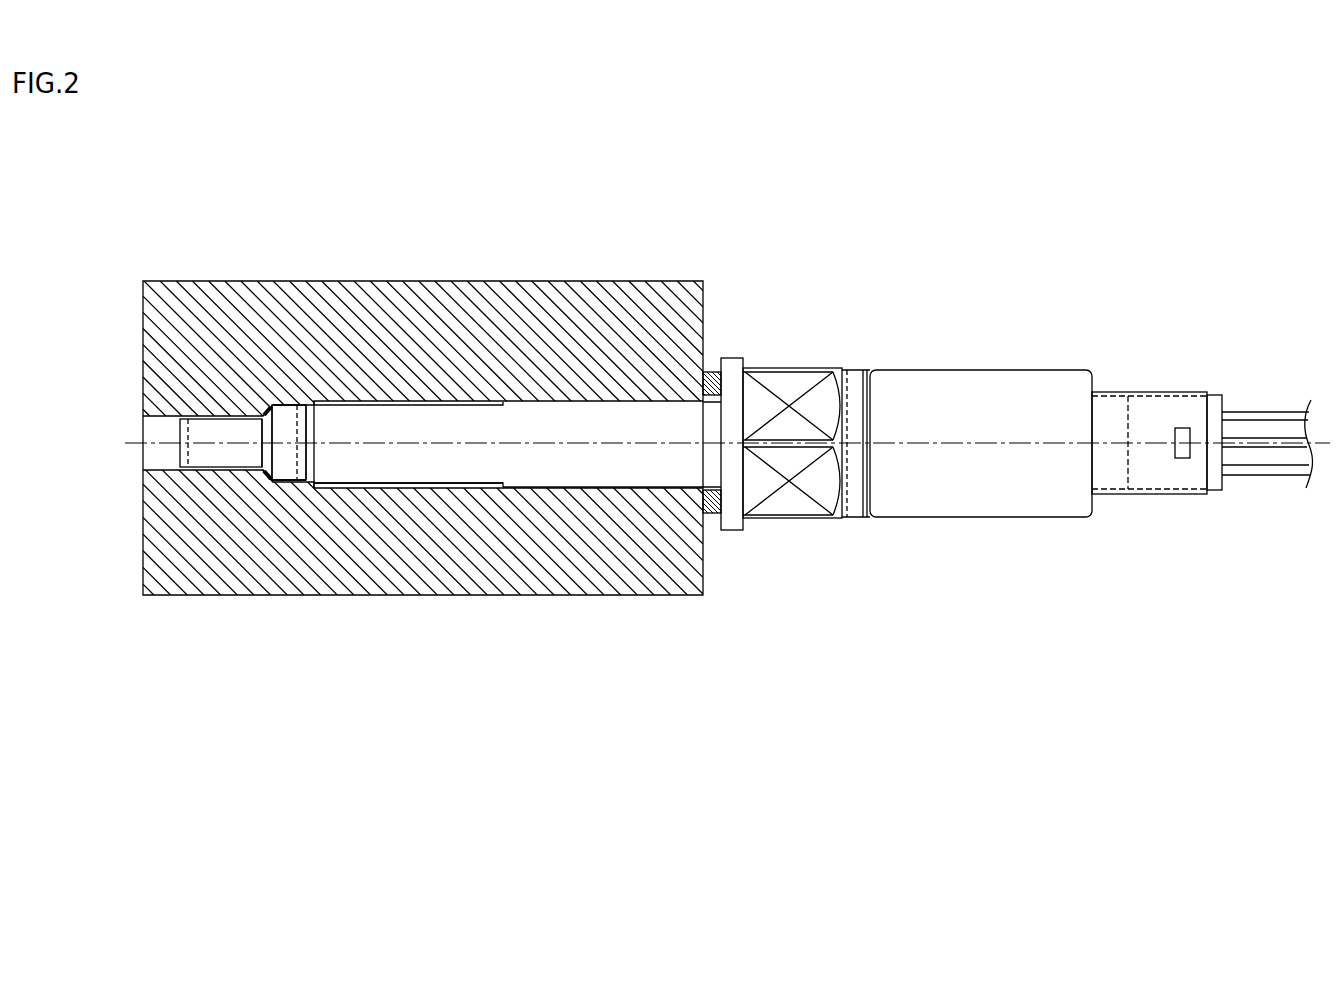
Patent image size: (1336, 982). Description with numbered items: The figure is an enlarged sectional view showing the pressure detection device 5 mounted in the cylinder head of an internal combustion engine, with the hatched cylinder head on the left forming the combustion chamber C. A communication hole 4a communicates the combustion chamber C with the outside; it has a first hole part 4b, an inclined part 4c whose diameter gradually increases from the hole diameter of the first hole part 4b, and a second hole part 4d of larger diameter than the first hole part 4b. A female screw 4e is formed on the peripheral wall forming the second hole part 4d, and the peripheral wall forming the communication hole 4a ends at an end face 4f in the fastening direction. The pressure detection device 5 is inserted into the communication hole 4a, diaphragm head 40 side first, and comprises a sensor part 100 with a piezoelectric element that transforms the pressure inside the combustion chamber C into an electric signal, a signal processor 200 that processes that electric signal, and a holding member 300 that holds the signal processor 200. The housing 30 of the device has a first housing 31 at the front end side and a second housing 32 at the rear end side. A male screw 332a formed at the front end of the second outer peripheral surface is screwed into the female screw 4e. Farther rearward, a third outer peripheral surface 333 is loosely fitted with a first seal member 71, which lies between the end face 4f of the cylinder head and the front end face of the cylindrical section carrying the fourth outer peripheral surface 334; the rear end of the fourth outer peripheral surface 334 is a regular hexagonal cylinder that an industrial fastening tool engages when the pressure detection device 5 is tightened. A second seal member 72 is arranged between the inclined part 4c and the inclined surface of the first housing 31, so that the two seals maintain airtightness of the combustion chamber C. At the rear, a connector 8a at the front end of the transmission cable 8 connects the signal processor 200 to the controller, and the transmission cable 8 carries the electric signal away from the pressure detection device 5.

The sensor part 100 is at (187, 332).
The combustion chamber C is at (100, 343).
The diaphragm head 40 is at (180, 428).
The housing 30 is at (245, 228).
The first housing 31 is at (240, 417).
The second housing 32 is at (305, 415).
The male screw 332a is at (437, 415).
The communication hole 4a is at (600, 484).
The first hole part 4b is at (145, 463).
The inclined part 4c is at (262, 466).
The second hole part 4d is at (287, 482).
The female screw 4e is at (391, 483).
The end face 4f is at (722, 502).
The second seal member 72 is at (268, 477).
The first seal member 71 is at (708, 516).
The third outer peripheral surface 333 is at (712, 372).
The fourth outer peripheral surface 334 is at (775, 356).
The pressure detection device 5 is at (899, 292).
The holding member 300 is at (973, 370).
The signal processor 200 is at (1142, 392).
The connector 8a is at (1215, 395).
The transmission cable 8 is at (1259, 348).